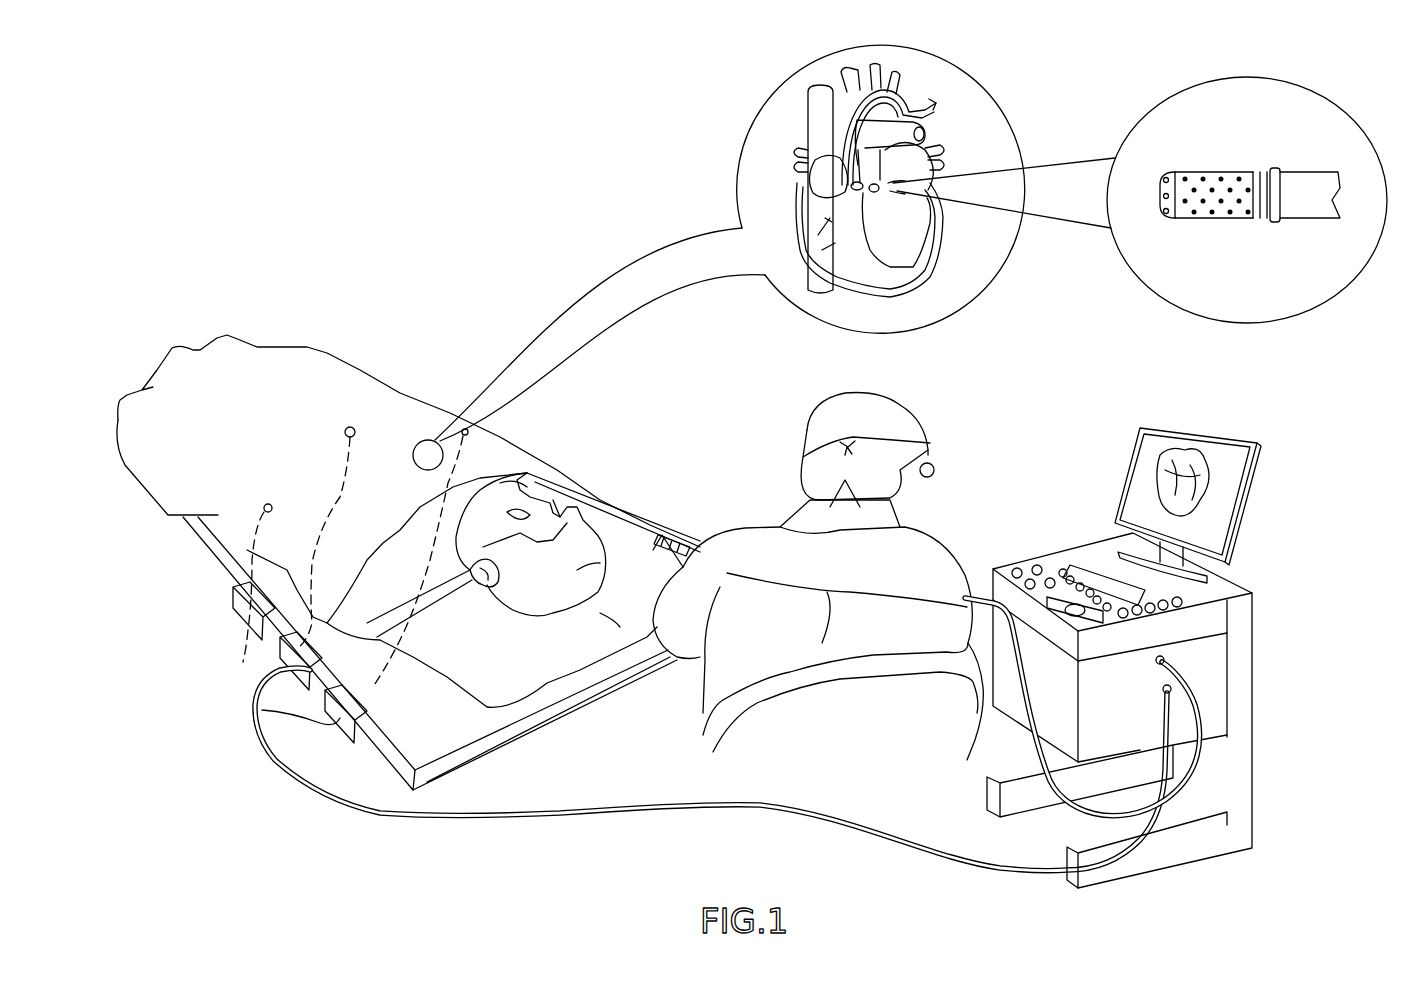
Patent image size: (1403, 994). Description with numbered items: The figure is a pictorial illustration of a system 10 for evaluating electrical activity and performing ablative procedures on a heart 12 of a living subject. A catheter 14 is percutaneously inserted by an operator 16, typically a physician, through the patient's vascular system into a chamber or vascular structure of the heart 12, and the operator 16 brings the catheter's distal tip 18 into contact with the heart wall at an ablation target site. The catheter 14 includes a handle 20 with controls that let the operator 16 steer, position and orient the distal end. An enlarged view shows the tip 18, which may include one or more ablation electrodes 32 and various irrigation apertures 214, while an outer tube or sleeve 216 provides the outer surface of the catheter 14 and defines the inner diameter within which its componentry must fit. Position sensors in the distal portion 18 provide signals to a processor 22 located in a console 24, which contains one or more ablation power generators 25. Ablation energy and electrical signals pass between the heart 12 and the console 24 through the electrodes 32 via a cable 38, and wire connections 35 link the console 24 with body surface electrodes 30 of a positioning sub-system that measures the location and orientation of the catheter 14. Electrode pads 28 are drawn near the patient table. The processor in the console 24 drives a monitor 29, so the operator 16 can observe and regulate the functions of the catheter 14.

The system 10 is at (396, 132).
The heart 12 is at (913, 280).
The catheter 14 is at (918, 107).
The operator 16 is at (730, 527).
The distal tip 18 is at (1215, 199).
The handle 20 is at (674, 535).
The processor 22 is at (1218, 717).
The console 24 is at (1150, 658).
The ablation power generator 25 is at (1218, 613).
The body surface electrode pads 28 is at (232, 600).
The monitor 29 is at (1259, 458).
The body surface electrodes 30 is at (345, 432).
The ablation electrodes 32 is at (1167, 172).
The wire connections 35 is at (342, 497).
The cable 38 is at (1035, 752).
The irrigation apertures 214 is at (1224, 172).
The outer tube or sleeve 216 is at (1301, 172).